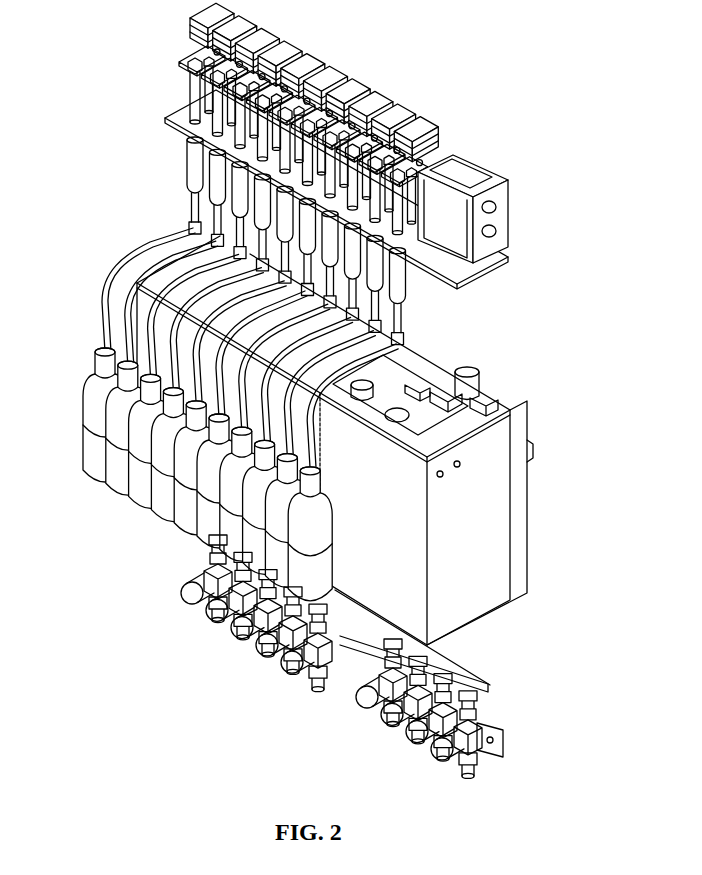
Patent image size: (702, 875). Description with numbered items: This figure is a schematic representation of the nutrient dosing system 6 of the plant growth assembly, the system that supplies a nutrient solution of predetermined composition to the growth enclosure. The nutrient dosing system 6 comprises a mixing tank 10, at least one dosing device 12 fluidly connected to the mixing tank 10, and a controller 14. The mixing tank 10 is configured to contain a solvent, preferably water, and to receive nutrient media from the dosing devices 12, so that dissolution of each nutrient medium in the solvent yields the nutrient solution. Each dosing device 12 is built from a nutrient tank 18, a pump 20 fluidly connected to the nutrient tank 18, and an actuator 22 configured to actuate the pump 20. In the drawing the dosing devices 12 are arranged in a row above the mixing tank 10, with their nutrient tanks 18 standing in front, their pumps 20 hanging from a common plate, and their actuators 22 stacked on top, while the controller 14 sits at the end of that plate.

The nutrient dosing system 6 is at (472, 86).
The mixing tank 10 is at (486, 533).
The dosing device 12 is at (148, 107).
The controller 14 is at (494, 218).
The nutrient tank 18 is at (84, 400).
The pump 20 is at (186, 174).
The actuator 22 is at (205, 48).